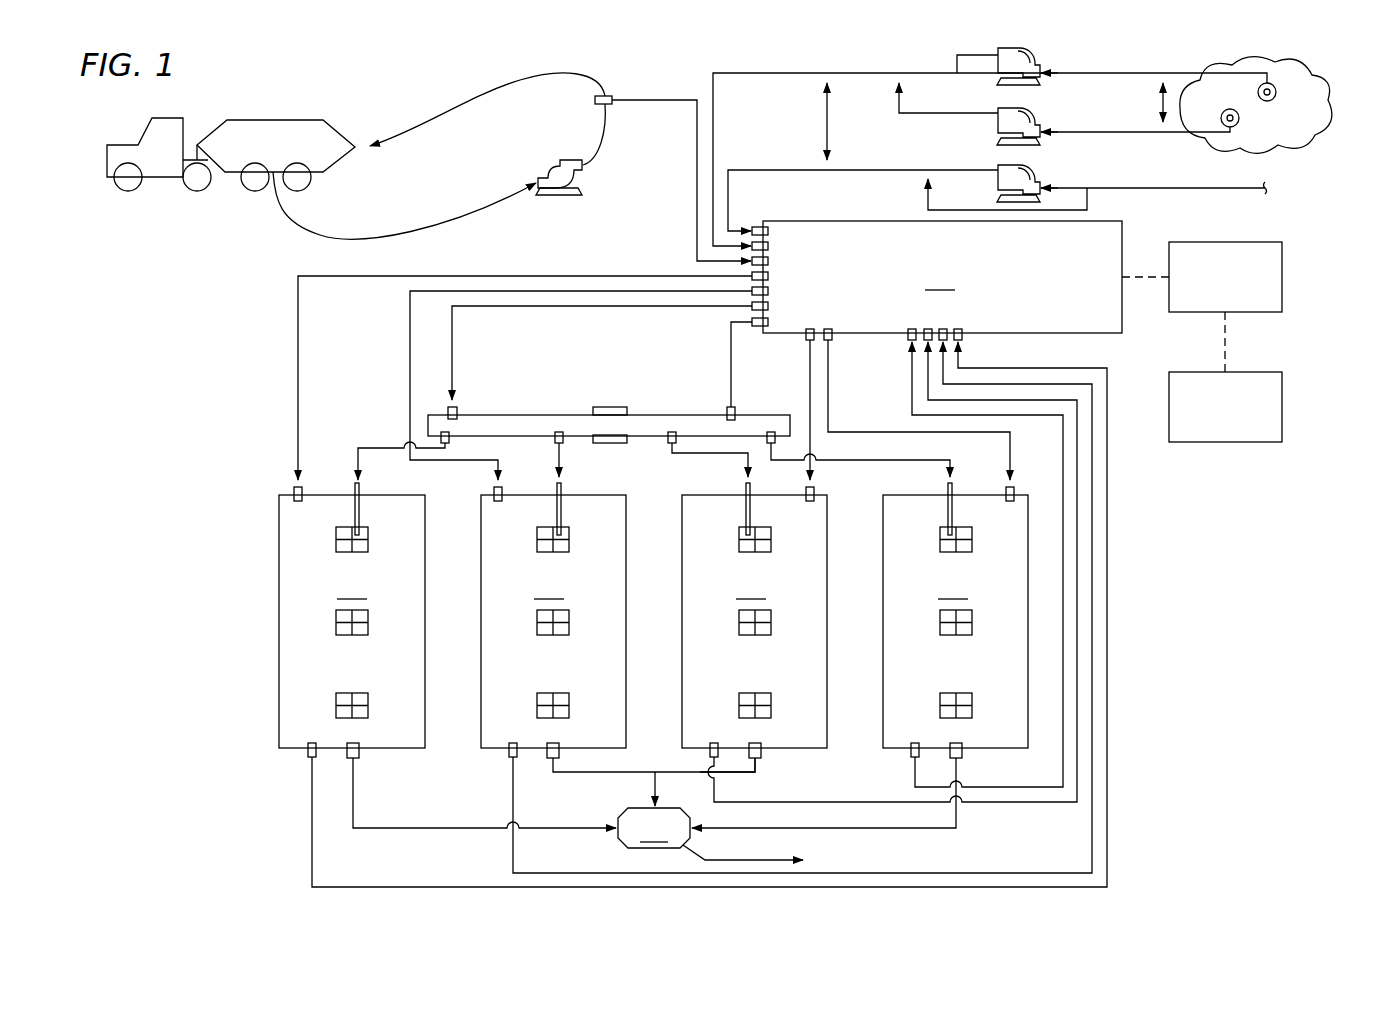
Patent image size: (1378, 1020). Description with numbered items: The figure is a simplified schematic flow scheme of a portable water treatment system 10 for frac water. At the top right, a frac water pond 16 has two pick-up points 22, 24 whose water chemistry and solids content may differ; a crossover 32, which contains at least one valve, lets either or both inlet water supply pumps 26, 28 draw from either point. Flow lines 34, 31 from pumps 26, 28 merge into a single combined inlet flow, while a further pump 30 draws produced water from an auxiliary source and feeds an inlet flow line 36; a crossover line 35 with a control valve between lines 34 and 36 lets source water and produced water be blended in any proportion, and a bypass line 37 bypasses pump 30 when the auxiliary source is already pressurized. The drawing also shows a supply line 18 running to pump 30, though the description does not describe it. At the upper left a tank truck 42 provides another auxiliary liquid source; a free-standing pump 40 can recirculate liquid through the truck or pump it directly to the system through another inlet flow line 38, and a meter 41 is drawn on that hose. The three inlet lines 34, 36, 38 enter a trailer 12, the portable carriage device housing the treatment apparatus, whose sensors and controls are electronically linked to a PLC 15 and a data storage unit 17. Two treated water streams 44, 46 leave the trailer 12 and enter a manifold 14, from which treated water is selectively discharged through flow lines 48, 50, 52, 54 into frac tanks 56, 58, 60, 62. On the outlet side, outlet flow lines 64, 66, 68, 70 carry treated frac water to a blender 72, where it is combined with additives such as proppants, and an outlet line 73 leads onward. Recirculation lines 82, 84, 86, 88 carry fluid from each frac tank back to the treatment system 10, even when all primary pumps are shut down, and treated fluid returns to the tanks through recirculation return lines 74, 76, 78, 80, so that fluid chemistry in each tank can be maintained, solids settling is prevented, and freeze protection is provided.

The portable water treatment system 10 is at (243, 127).
The trailer 12 is at (960, 280).
The manifold 14 is at (484, 417).
The PLC 15 is at (1277, 273).
The frac water pond 16 is at (1271, 101).
The data storage 17 is at (1192, 440).
The supply line 18 is at (1185, 187).
The pick-up point 22 is at (1257, 89).
The pick-up point 24 is at (1242, 116).
The inlet water supply pump 26 is at (1008, 68).
The inlet water supply pump 28 is at (1020, 122).
The pump 30 is at (1020, 178).
The flow line 31 is at (923, 113).
The crossover 32 is at (1163, 100).
The flow line 34 is at (792, 73).
The crossover line 35 is at (827, 125).
The inlet flow line 36 is at (788, 170).
The bypass line 37 is at (927, 200).
The inlet flow line 38 is at (672, 100).
The pump 40 is at (558, 165).
The flow meter 41 is at (595, 99).
The tank truck 42 is at (320, 118).
The treated water stream 44 is at (545, 308).
The treated water stream 46 is at (735, 378).
The flow line 48 is at (377, 447).
The flow line 50 is at (560, 455).
The flow line 52 is at (702, 458).
The flow line 54 is at (893, 460).
The frac tank 56 is at (352, 622).
The frac tank 58 is at (553, 622).
The frac tank 60 is at (754, 622).
The frac tank 62 is at (955, 622).
The outlet flow line 64 is at (443, 827).
The outlet flow line 66 is at (590, 773).
The outlet flow line 68 is at (740, 773).
The outlet flow line 70 is at (915, 828).
The blender 72 is at (654, 828).
The product outlet line 73 is at (765, 860).
The recirculation return line 74 is at (298, 310).
The recirculation return line 76 is at (410, 352).
The recirculation return line 78 is at (808, 352).
The recirculation return line 80 is at (830, 353).
The recirculation line 82 is at (418, 887).
The recirculation line 84 is at (512, 803).
The recirculation line 86 is at (878, 800).
The recirculation line 88 is at (1027, 785).